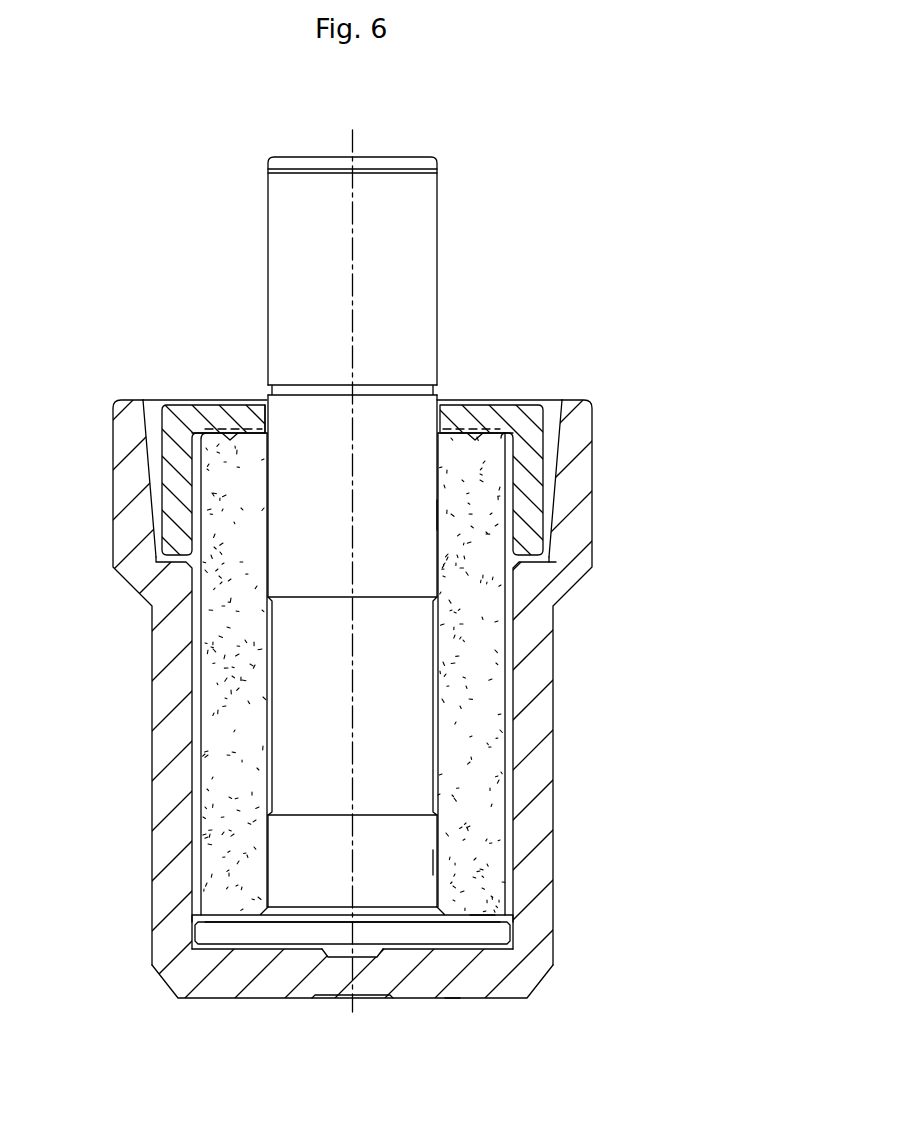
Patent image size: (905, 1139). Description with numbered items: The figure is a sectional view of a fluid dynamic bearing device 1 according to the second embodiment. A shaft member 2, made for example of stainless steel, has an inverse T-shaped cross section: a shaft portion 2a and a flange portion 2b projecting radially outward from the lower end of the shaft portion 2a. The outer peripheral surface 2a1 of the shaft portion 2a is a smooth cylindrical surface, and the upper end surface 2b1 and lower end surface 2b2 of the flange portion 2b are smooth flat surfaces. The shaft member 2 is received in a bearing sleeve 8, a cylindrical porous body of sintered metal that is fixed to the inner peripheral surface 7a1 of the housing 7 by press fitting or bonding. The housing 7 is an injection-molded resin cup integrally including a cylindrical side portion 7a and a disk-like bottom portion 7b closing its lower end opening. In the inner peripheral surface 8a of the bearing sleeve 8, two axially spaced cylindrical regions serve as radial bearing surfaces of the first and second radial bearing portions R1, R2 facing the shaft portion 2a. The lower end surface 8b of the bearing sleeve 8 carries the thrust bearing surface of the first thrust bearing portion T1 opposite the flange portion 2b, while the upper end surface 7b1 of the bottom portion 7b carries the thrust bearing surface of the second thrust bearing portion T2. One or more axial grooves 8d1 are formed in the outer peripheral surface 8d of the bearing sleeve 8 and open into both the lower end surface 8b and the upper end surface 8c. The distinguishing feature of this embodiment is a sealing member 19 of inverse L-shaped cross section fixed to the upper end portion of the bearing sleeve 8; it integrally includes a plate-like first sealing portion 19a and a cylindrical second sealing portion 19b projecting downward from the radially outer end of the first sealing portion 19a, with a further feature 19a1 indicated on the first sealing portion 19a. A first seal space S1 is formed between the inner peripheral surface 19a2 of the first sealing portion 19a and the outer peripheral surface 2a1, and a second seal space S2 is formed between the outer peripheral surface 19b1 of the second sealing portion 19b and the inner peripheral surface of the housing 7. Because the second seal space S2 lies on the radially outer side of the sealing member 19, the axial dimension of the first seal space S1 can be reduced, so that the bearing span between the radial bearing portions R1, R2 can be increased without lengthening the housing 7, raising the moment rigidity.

The fluid dynamic bearing device 1 is at (357, 598).
The shaft member 2 is at (416, 611).
The shaft portion 2a is at (283, 240).
The outer peripheral surface of the shaft portion 2a1 is at (440, 832).
The flange portion 2b is at (409, 983).
The upper end surface of the flange portion 2b1 is at (366, 923).
The lower end surface of the flange portion 2b2 is at (362, 953).
The housing 7 is at (353, 724).
The side portion 7a is at (346, 682).
The inner peripheral surface of the housing 7a1 is at (207, 640).
The bottom portion 7b is at (352, 994).
The upper end surface of the bottom portion 7b1 is at (287, 940).
The bearing sleeve 8 is at (339, 643).
The inner peripheral surface of the bearing sleeve 8a is at (285, 706).
The lower end surface of the bearing sleeve 8b is at (225, 925).
The upper end surface of the bearing sleeve 8c is at (490, 412).
The outer peripheral surface of the bearing sleeve 8d is at (289, 674).
The axial groove 8d1 is at (200, 760).
The sealing member 19 is at (357, 436).
The first sealing portion 19a is at (420, 438).
The inner protrusion of seal 19a1 is at (460, 440).
The inner peripheral surface of the first sealing portion 19a2 is at (268, 410).
The second sealing portion 19b is at (165, 505).
The outer peripheral surface of the second sealing portion 19b1 is at (545, 497).
The first seal space S1 is at (446, 400).
The second seal space S2 is at (552, 410).
The first radial bearing portion R1 is at (438, 518).
The second radial bearing portion R2 is at (438, 862).
The first thrust bearing portion T1 is at (482, 915).
The second thrust bearing portion T2 is at (452, 958).